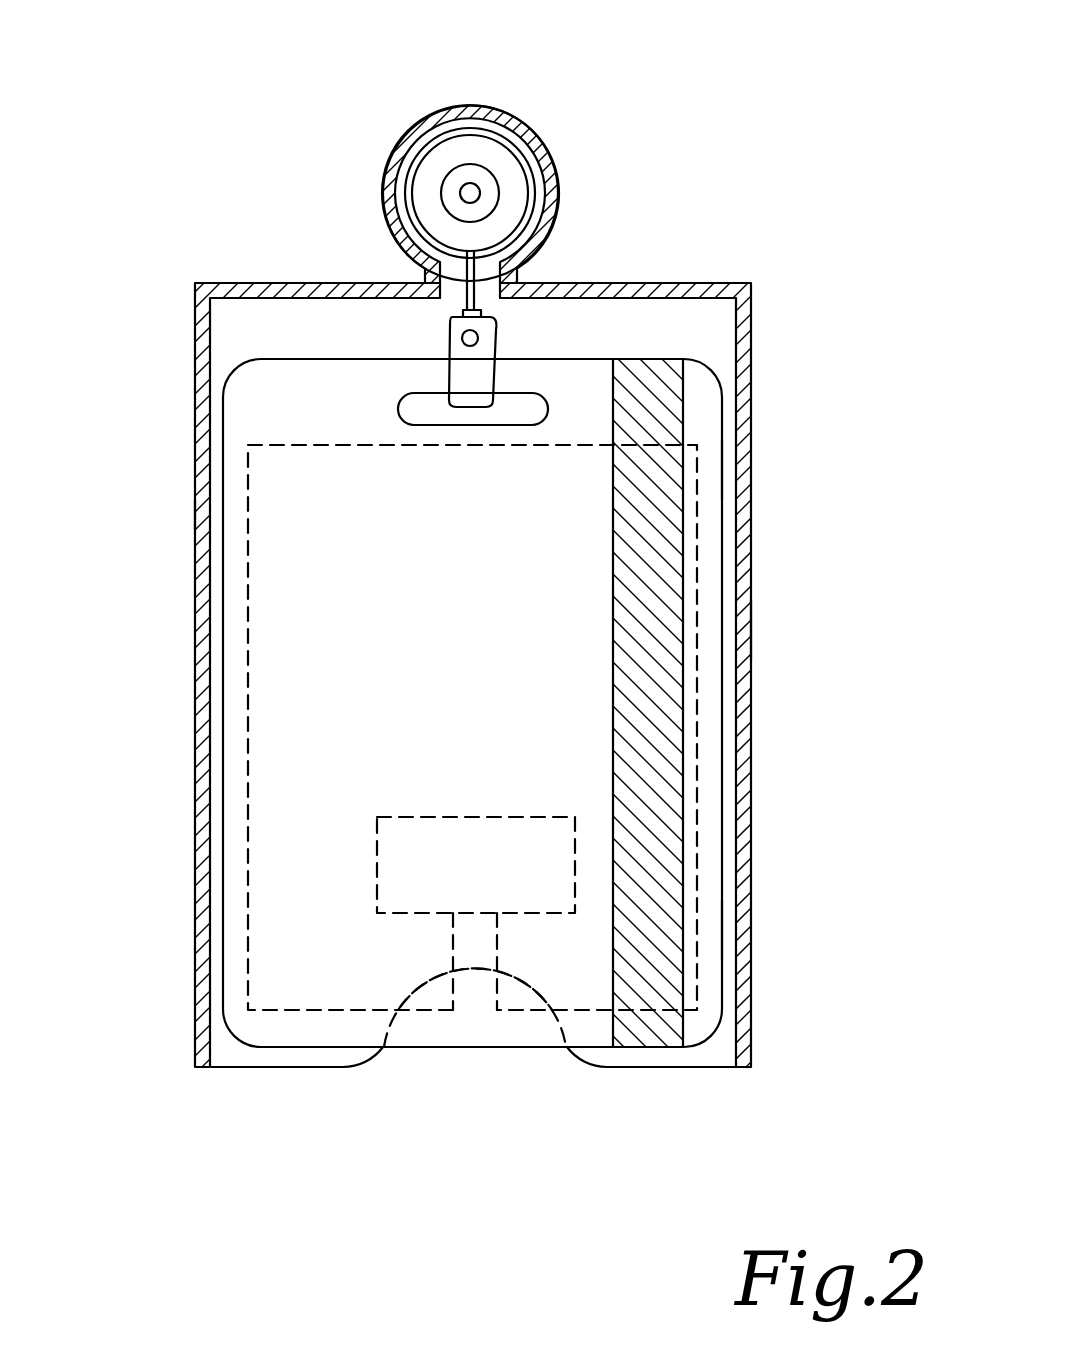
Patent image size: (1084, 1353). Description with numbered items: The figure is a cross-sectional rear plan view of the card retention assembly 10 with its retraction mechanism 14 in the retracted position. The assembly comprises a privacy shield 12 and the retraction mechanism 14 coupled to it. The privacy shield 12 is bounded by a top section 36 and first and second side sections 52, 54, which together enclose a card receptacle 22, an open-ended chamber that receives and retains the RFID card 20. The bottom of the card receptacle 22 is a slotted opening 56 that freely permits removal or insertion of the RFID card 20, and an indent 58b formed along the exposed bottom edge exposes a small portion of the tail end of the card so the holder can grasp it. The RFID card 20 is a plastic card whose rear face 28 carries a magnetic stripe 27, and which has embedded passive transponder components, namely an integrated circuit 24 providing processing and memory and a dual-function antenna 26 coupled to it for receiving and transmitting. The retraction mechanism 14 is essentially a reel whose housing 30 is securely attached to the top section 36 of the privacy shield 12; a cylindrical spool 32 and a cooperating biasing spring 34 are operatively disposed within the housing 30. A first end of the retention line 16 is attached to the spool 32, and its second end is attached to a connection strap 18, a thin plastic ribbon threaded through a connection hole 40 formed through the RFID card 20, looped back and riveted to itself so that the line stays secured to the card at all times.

The card retention assembly 10 is at (768, 58).
The privacy shield 12 is at (750, 331).
The retraction mechanism 14 is at (495, 107).
The retention line 16 is at (475, 288).
The connection strap 18 is at (457, 362).
The RFID card 20 is at (710, 475).
The card receptacle 22 is at (733, 921).
The integrated circuit 24 is at (508, 842).
The antenna 26 is at (250, 968).
The magnetic stripe 27 is at (632, 822).
The rear face 28 is at (342, 696).
The housing 30 is at (388, 158).
The spool 32 is at (508, 162).
The biasing spring 34 is at (450, 172).
The top section 36 is at (668, 282).
The connection hole 40 is at (516, 409).
The first side section 52 is at (752, 632).
The second side section 54 is at (195, 515).
The slotted opening 56 is at (325, 1060).
The indent 58b is at (543, 1000).